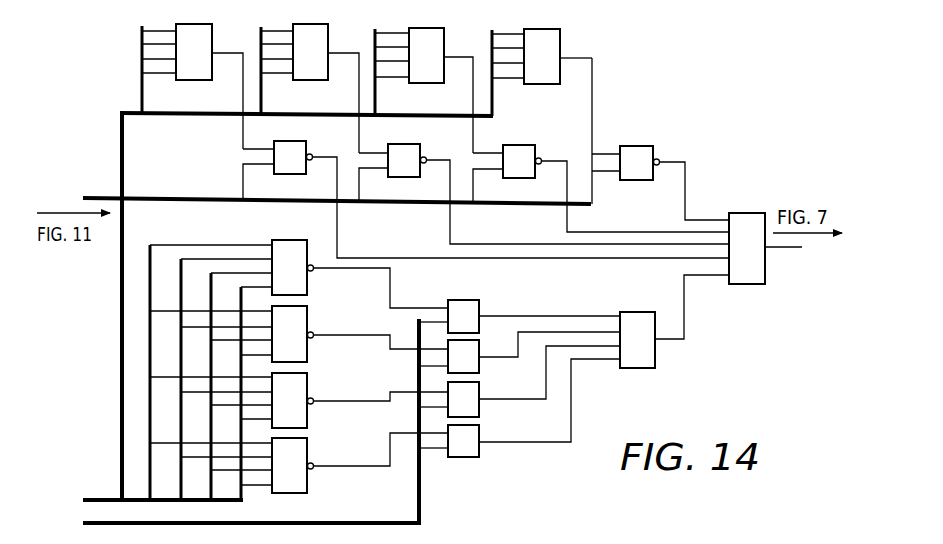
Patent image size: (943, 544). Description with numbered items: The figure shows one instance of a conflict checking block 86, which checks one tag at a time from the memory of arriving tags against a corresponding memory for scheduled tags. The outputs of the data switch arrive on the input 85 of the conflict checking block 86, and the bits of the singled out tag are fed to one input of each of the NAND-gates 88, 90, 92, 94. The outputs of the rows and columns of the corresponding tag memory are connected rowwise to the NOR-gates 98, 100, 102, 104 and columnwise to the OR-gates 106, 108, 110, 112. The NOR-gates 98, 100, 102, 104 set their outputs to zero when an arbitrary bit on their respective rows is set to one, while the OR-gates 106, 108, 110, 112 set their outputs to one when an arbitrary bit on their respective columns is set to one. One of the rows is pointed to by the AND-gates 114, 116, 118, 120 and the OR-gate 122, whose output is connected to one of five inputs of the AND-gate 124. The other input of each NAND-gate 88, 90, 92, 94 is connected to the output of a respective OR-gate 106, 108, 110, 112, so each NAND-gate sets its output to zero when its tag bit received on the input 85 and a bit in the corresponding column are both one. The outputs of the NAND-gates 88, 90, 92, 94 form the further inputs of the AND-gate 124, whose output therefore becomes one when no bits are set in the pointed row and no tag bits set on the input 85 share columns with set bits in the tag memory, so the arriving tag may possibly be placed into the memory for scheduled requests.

The input 85 is at (185, 196).
The conflict checking block 86 is at (608, 70).
The NAND-gate 88 is at (307, 145).
The NAND-gate 90 is at (421, 148).
The NAND-gate 92 is at (536, 149).
The NAND-gate 94 is at (654, 149).
The NOR-gate 98 is at (307, 289).
The NOR-gate 100 is at (307, 356).
The NOR-gate 102 is at (307, 422).
The NOR-gate 104 is at (307, 487).
The OR-gate 106 is at (197, 82).
The OR-gate 108 is at (313, 82).
The OR-gate 110 is at (428, 85).
The OR-gate 112 is at (544, 86).
The AND-gate 114 is at (481, 308).
The AND-gate 116 is at (481, 349).
The AND-gate 118 is at (481, 392).
The AND-gate 120 is at (481, 433).
The OR-gate 122 is at (636, 369).
The AND-gate 124 is at (746, 285).